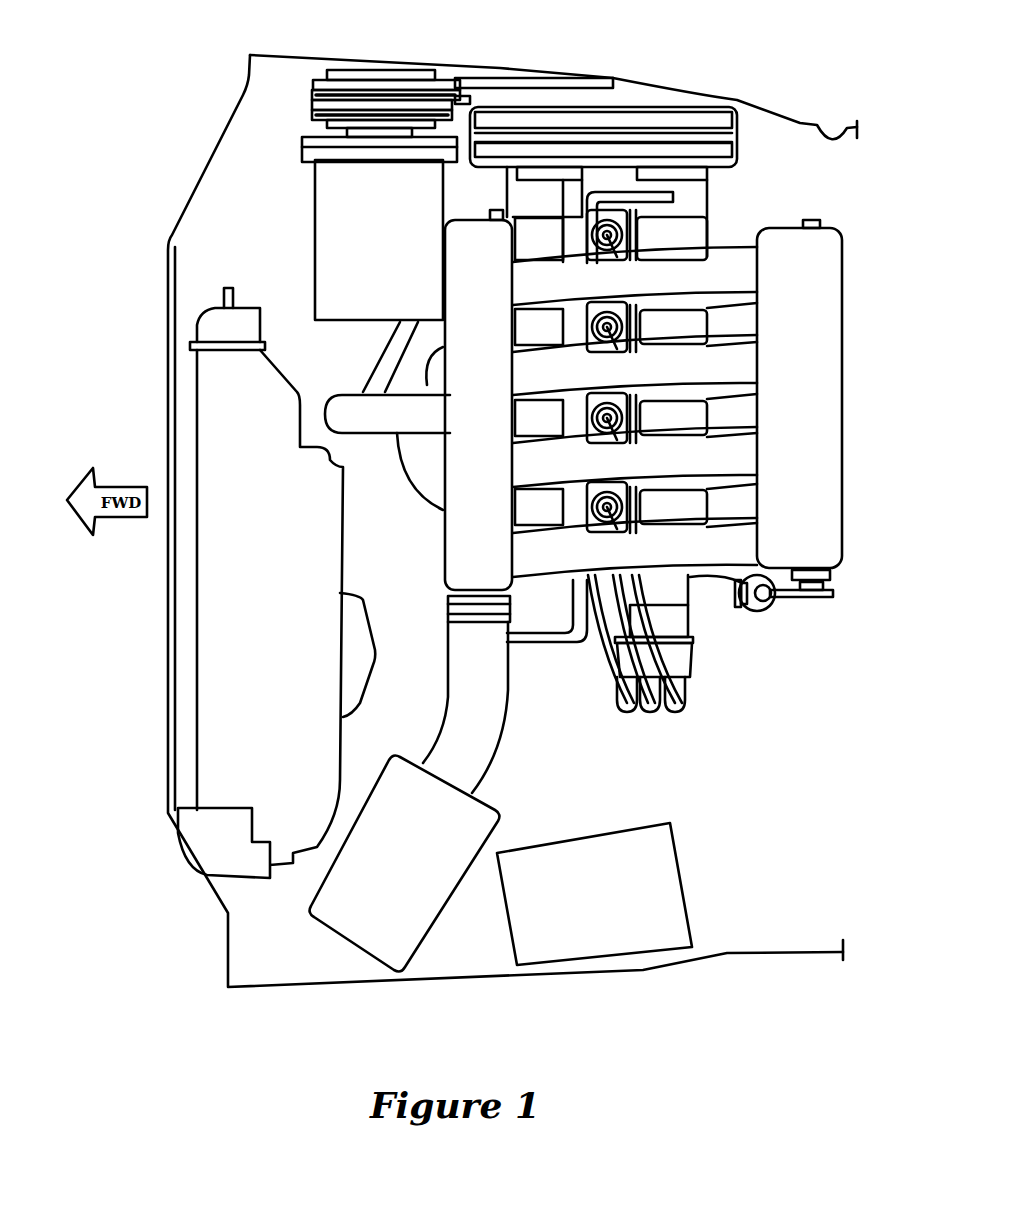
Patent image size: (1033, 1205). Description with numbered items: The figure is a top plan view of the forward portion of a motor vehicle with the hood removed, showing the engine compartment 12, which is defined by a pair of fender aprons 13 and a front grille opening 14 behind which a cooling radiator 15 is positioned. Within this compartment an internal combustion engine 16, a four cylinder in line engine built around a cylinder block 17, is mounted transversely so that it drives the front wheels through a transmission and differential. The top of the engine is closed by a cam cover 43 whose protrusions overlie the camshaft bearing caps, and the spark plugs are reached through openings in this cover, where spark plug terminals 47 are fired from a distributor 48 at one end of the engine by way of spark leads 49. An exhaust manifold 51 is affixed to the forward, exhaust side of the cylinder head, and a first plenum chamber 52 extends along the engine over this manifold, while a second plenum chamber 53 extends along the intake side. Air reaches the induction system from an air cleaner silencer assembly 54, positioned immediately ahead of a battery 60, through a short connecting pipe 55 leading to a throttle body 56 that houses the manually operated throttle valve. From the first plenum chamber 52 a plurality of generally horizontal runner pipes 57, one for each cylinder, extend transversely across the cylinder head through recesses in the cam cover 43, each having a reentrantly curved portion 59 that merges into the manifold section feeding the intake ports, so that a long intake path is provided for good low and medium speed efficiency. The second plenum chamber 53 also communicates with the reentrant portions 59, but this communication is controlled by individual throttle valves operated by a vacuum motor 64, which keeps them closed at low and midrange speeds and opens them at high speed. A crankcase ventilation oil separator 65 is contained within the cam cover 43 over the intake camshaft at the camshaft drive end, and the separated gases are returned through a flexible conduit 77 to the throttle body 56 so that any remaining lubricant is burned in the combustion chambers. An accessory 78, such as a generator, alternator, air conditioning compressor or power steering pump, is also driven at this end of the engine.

The engine compartment 12 is at (540, 762).
The fender aprons 13 is at (847, 128).
The front grille opening 14 is at (163, 733).
The cooling radiator 15 is at (227, 633).
The internal combustion engine 16 is at (701, 92).
The cylinder block 17 is at (210, 152).
The cam cover 43 is at (597, 163).
The spark plug terminals 47 is at (620, 240).
The distributor 48 is at (688, 657).
The spark leads 49 is at (615, 648).
The exhaust manifold 51 is at (370, 375).
The first plenum chamber 52 is at (470, 553).
The second plenum chamber 53 is at (832, 315).
The air cleaner silencer assembly 54 is at (383, 937).
The connecting pipe 55 is at (470, 755).
The throttle body 56 is at (447, 615).
The runner pipes 57 is at (525, 290).
The reentrantly curved portion 59 is at (750, 273).
The battery 60 is at (660, 877).
The vacuum motor 64 is at (775, 598).
The crankcase ventilation oil separator 65 is at (692, 217).
The flexible conduit 77 is at (627, 197).
The accessory 78 is at (330, 202).